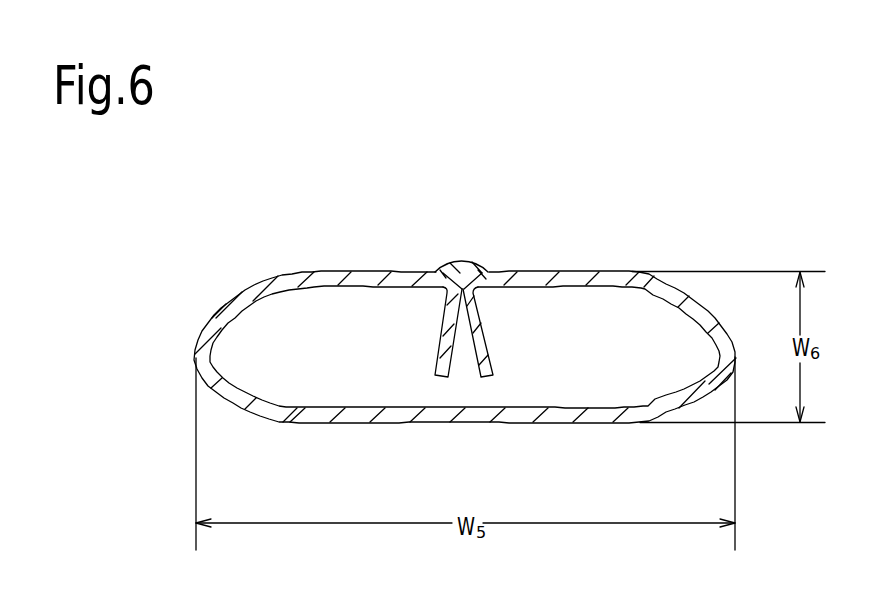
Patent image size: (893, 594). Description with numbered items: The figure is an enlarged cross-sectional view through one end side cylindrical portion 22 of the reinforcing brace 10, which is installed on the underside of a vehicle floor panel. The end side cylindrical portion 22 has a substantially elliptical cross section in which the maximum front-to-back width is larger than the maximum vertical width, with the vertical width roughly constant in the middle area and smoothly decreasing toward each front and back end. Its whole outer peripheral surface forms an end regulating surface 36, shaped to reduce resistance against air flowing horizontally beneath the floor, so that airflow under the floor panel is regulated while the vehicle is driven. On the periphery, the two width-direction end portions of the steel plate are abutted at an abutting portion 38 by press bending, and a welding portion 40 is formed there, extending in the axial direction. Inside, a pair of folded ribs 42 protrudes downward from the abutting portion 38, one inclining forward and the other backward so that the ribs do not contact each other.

The reinforcing brace 10 is at (318, 233).
The end side cylindrical portion 22 is at (613, 268).
The end regulating surface 36 is at (227, 298).
The abutting portion 38 is at (478, 297).
The welding portion 40 is at (462, 268).
The folded rib 42 is at (448, 335).